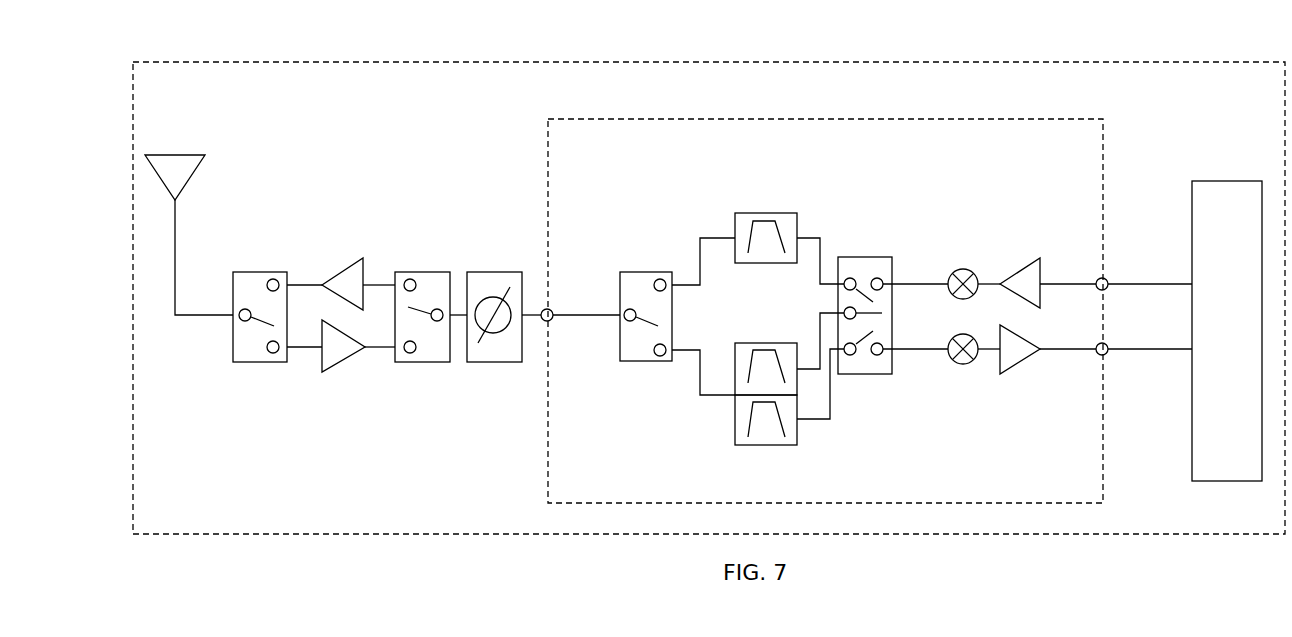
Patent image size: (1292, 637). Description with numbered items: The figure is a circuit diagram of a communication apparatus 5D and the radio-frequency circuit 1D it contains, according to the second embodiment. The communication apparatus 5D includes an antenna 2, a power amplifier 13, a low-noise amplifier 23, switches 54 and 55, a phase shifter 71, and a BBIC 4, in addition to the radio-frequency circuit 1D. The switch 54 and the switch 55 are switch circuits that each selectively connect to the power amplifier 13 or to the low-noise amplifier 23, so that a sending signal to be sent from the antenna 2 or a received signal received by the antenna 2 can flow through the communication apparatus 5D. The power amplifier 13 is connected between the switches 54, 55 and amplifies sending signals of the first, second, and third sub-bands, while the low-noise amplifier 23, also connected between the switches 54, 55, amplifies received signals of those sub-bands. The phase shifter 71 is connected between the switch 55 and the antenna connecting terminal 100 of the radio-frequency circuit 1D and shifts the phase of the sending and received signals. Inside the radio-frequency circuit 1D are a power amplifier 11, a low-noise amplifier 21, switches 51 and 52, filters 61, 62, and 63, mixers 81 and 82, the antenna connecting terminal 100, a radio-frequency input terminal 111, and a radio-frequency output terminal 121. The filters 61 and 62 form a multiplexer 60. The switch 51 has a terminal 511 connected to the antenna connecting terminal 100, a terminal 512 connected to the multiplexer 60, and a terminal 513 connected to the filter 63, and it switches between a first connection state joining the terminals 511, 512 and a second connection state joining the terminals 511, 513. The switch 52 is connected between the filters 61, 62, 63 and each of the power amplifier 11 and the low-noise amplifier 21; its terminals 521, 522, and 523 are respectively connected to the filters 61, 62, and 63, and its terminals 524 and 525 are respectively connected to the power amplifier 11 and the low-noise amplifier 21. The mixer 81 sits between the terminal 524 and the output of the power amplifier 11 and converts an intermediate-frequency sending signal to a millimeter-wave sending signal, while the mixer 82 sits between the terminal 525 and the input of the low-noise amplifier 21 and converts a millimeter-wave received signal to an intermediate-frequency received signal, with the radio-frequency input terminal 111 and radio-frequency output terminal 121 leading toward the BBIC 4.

The communication apparatus 5D is at (1246, 62).
The radio-frequency circuit 1D is at (1067, 119).
The antenna 2 is at (172, 155).
The BBIC 4 is at (1222, 181).
The power amplifier 11 is at (1015, 268).
The low-noise amplifier 21 is at (1020, 337).
The power amplifier 13 is at (348, 266).
The low-noise amplifier 23 is at (341, 362).
The switch 51 is at (646, 314).
The terminal 511 is at (624, 321).
The terminal 512 is at (657, 357).
The terminal 513 is at (666, 291).
The switch 52 is at (858, 314).
The terminal 521 is at (852, 357).
The terminal 522 is at (843, 312).
The terminal 523 is at (850, 278).
The terminal 524 is at (884, 279).
The terminal 525 is at (884, 356).
The switch 54 is at (272, 272).
The switch 55 is at (432, 272).
The multiplexer 60 is at (727, 329).
The filter 61 is at (765, 445).
The filter 62 is at (757, 343).
The filter 63 is at (757, 213).
The phase shifter 71 is at (500, 272).
The mixer 81 is at (967, 269).
The mixer 82 is at (966, 368).
The antenna connecting terminal 100 is at (552, 309).
The radio-frequency input terminal 111 is at (1097, 279).
The radio-frequency output terminal 121 is at (1097, 344).